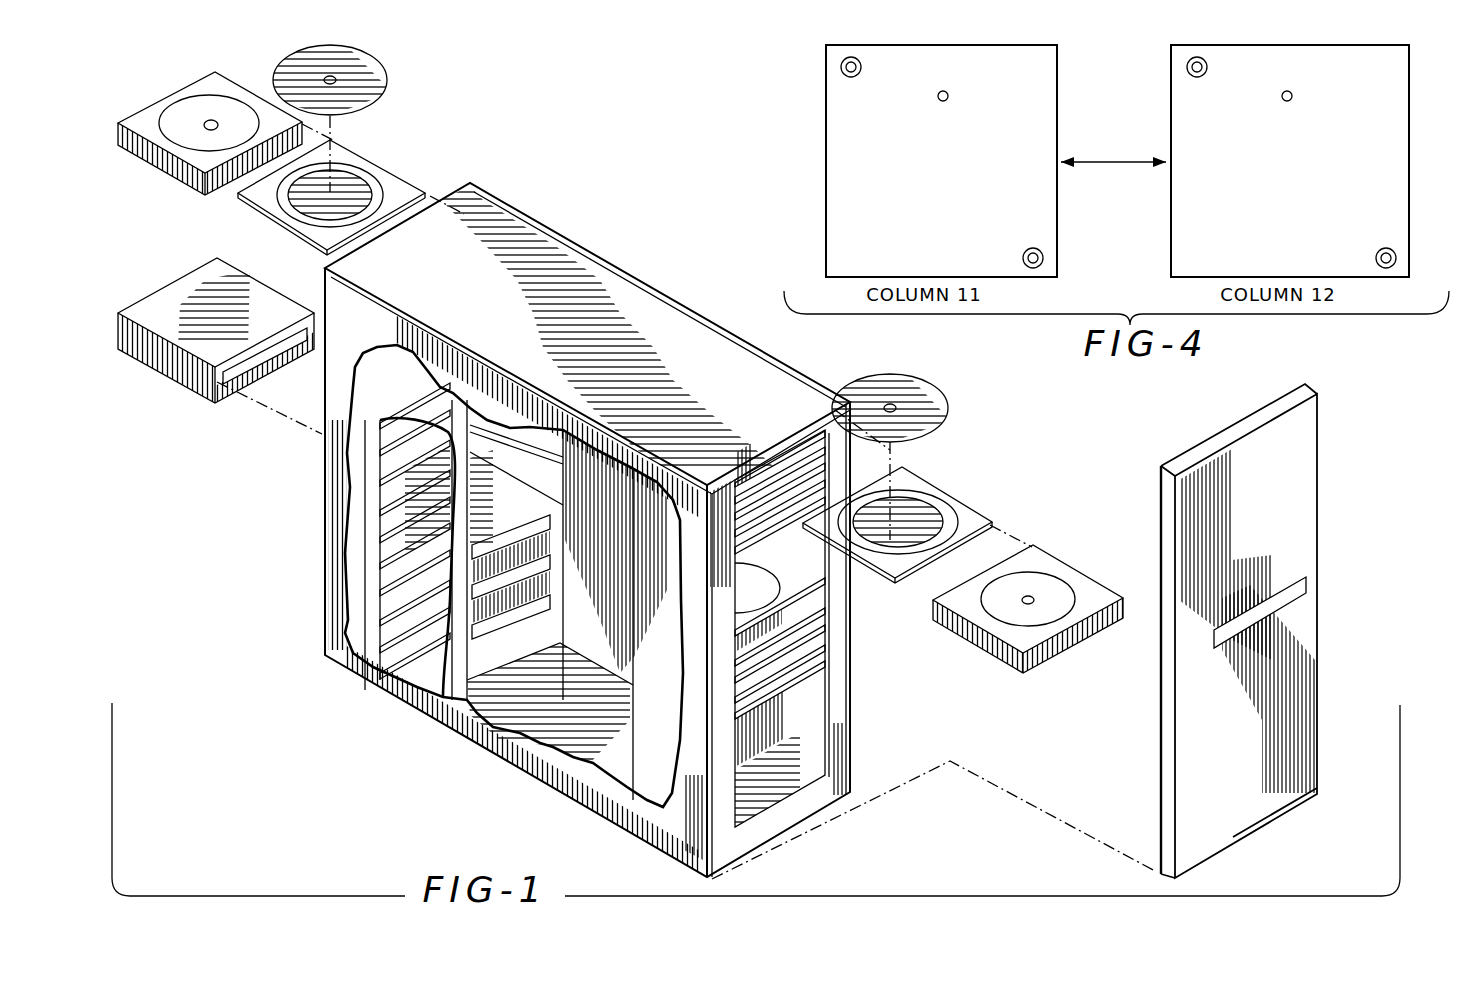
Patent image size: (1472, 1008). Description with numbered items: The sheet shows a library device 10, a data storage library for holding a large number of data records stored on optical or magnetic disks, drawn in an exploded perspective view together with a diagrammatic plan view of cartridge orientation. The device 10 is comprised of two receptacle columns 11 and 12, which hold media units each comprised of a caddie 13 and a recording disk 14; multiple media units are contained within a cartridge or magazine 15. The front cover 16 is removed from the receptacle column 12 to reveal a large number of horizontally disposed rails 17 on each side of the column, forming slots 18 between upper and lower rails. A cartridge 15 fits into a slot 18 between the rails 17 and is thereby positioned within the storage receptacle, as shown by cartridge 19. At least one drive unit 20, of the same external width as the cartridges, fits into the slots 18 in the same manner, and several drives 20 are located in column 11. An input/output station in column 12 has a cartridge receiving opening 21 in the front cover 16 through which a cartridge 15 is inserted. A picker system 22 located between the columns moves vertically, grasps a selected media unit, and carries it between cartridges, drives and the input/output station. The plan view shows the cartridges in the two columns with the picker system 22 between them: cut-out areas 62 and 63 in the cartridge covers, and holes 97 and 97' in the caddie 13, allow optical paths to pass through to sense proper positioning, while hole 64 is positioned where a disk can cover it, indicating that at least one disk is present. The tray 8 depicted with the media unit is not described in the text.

In FIG. 1, the carrier tray 8 is at (968, 518).
In FIG. 1, the library device 10 is at (250, 650).
In FIG. 1, the receptacle column 11 is at (362, 356).
In FIG. 1, the receptacle column 12 is at (655, 738).
In FIG. 1, the caddie 13 is at (393, 178).
In FIG. 1, the recording disk 14 is at (382, 84).
In FIG. 1, the cartridge 15 is at (152, 112).
In FIG. 4, the cartridge 15 is at (847, 133).
In FIG. 1, the front cover 16 is at (1313, 462).
In FIG. 1, the rails 17 is at (795, 713).
In FIG. 1, the slots 18 is at (815, 717).
In FIG. 1, the cartridge 19 is at (382, 507).
In FIG. 1, the drive unit 20 is at (272, 311).
In FIG. 1, the cartridge receiving opening 21 is at (1308, 588).
In FIG. 1, the picker system 22 is at (578, 683).
In FIG. 4, the picker system 22 is at (1114, 158).
In FIG. 4, the hole 62 is at (862, 66).
In FIG. 4, the hole 63 is at (1023, 258).
In FIG. 4, the hole 64 is at (947, 94).
In FIG. 4, the hole 97 is at (1045, 85).
In FIG. 4, the cut-out area 97' is at (1194, 234).